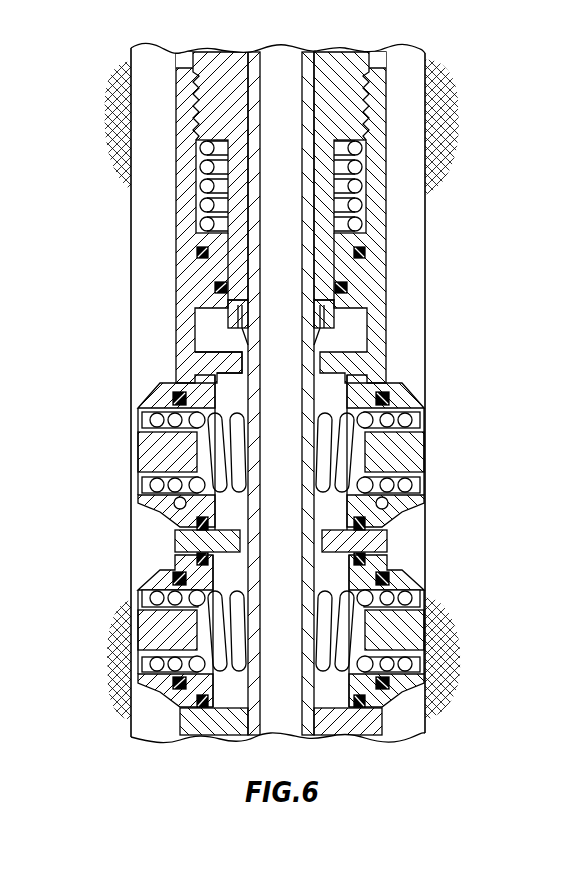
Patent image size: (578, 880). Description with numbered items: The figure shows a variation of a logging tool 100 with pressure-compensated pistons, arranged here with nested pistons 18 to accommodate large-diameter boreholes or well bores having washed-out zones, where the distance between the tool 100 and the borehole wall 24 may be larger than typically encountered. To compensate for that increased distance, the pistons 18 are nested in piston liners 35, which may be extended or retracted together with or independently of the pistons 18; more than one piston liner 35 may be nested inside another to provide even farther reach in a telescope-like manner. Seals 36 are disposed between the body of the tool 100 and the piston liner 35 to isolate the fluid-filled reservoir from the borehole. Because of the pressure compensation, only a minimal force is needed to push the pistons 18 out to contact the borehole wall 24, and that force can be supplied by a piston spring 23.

The tool 100 is at (310, 395).
The borehole wall 24 is at (438, 190).
The pistons 18 is at (427, 516).
The piston spring 23 is at (418, 664).
The piston liners 35 is at (160, 386).
The seals 36 is at (200, 363).